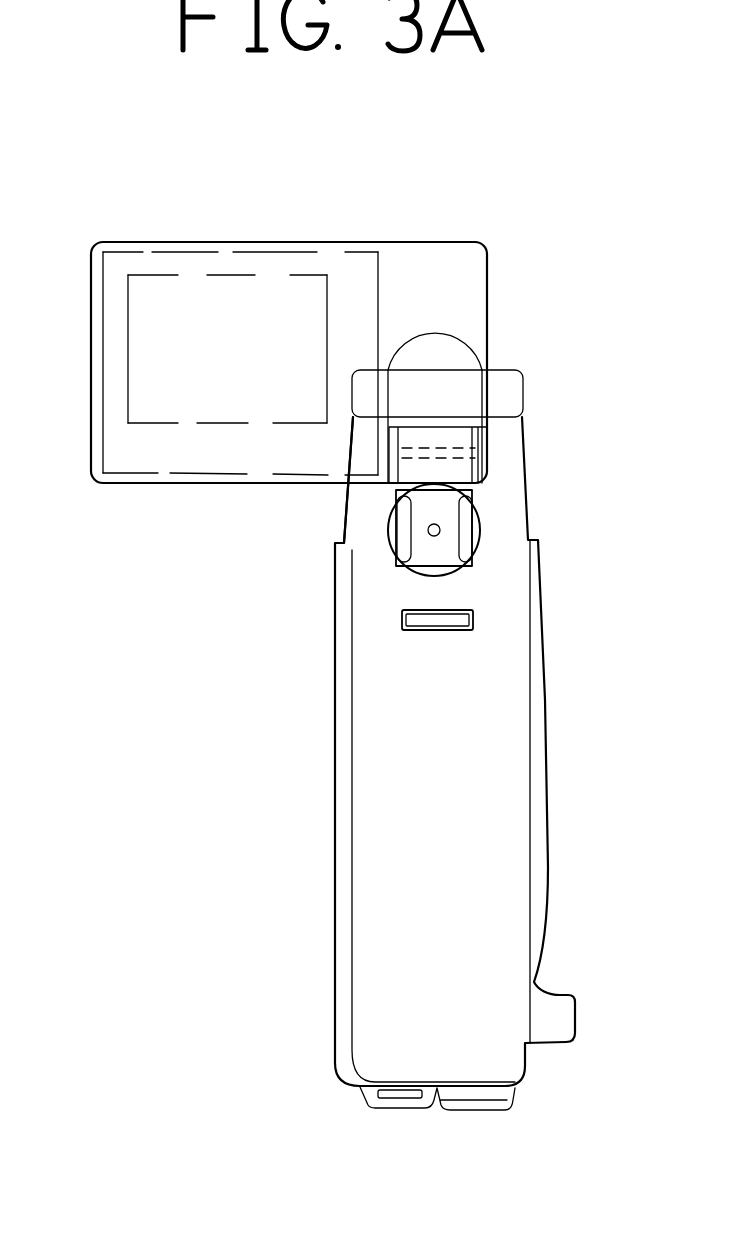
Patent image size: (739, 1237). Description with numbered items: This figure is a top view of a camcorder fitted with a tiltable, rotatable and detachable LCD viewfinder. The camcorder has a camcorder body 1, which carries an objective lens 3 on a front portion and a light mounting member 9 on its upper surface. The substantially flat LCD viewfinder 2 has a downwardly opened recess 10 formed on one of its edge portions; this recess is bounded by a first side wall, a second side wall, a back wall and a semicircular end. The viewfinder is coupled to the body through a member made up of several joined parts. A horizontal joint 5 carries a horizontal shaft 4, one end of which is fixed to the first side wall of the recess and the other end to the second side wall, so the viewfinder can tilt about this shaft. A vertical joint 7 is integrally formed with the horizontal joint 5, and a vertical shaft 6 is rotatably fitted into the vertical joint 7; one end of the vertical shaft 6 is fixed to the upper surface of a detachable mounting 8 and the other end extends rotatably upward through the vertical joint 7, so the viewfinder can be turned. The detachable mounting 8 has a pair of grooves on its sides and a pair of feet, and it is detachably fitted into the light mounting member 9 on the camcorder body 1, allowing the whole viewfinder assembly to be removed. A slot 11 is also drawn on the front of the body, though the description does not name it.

The camcorder body 1 is at (497, 658).
The LCD viewfinder 2 is at (473, 265).
The objective lens 3 is at (502, 382).
The horizontal shaft 4 is at (480, 456).
The horizontal joint 5 is at (457, 435).
The vertical shaft 6 is at (440, 531).
The vertical joint 7 is at (450, 547).
The detachable mounting 8 is at (473, 500).
The light mounting member 9 is at (387, 527).
The downwardly opened recess 10 is at (427, 352).
The slot 11 is at (402, 618).